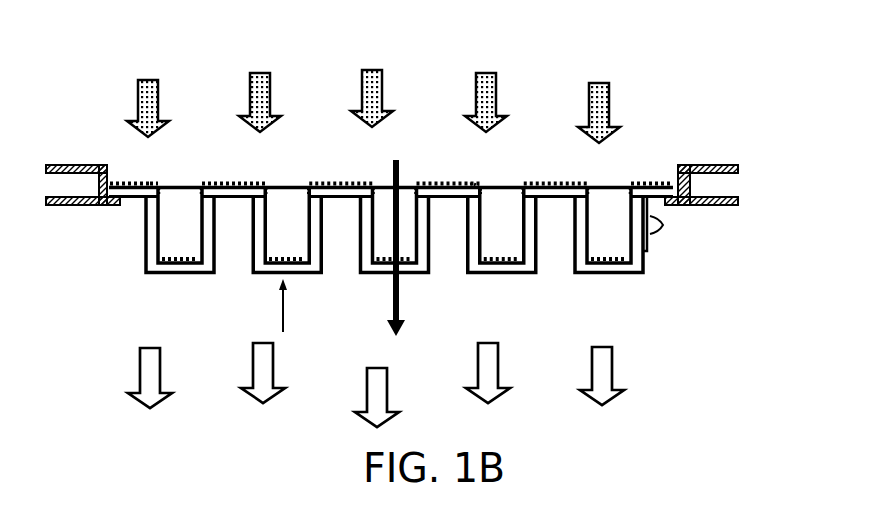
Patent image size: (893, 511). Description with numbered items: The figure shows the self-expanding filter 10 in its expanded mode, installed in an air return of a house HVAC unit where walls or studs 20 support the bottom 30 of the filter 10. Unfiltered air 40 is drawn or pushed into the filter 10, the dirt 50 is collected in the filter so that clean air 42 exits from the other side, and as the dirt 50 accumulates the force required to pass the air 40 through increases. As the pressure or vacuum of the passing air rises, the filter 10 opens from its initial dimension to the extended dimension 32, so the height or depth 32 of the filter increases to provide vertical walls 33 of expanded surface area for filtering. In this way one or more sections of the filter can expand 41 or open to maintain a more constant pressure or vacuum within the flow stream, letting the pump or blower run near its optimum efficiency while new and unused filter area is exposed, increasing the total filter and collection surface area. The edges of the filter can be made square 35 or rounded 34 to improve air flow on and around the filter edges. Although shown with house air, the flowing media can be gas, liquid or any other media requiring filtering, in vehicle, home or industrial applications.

The filter 10 is at (672, 117).
The walls or studs 20 is at (707, 203).
The bottom 30 is at (130, 202).
The extended dimension 32 is at (283, 178).
The vertical walls 33 is at (663, 225).
The rounded edge 34 is at (484, 184).
The square edge 35 is at (200, 183).
The unfiltered air 40 is at (250, 75).
The expansion 41 is at (390, 302).
The clean air 42 is at (140, 378).
The dirt 50 is at (125, 183).